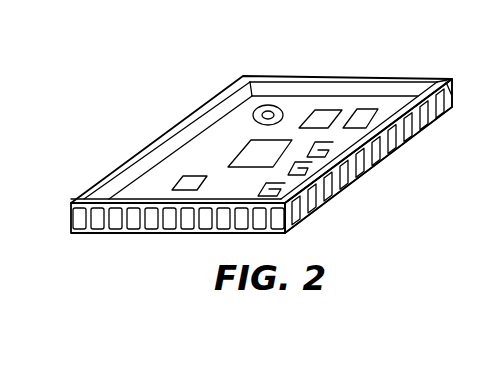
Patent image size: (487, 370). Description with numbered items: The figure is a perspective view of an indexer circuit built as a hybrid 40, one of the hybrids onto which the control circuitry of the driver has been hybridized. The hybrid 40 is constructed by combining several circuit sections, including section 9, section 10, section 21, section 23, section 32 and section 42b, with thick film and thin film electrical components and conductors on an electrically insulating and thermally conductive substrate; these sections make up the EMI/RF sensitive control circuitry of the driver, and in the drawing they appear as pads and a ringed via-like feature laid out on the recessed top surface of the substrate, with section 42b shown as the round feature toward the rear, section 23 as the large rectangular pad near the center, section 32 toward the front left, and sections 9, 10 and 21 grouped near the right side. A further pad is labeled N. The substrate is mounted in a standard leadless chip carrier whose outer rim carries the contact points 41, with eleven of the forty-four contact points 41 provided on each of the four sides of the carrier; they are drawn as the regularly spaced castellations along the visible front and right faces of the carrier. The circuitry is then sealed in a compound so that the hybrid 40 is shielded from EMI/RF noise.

The section 42b is at (268, 112).
The land pad N is at (338, 110).
The hybrid 40 is at (456, 82).
The contact points 41 is at (448, 108).
The section 23 is at (243, 156).
The section 32 is at (172, 182).
The section 9 is at (368, 162).
The section 10 is at (368, 156).
The section 21 is at (318, 212).